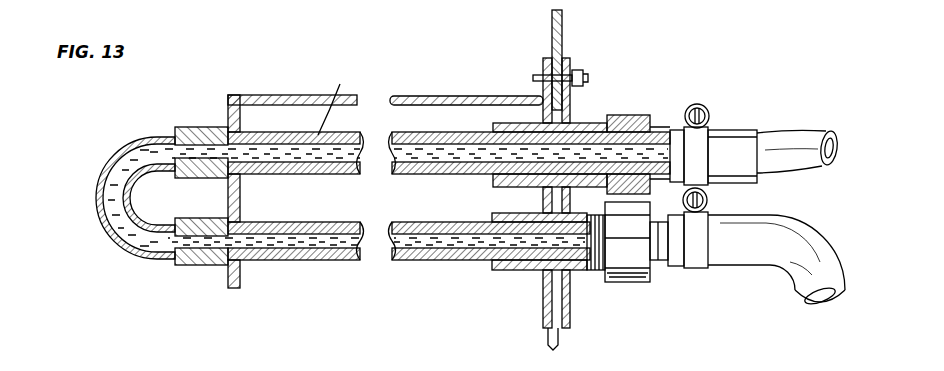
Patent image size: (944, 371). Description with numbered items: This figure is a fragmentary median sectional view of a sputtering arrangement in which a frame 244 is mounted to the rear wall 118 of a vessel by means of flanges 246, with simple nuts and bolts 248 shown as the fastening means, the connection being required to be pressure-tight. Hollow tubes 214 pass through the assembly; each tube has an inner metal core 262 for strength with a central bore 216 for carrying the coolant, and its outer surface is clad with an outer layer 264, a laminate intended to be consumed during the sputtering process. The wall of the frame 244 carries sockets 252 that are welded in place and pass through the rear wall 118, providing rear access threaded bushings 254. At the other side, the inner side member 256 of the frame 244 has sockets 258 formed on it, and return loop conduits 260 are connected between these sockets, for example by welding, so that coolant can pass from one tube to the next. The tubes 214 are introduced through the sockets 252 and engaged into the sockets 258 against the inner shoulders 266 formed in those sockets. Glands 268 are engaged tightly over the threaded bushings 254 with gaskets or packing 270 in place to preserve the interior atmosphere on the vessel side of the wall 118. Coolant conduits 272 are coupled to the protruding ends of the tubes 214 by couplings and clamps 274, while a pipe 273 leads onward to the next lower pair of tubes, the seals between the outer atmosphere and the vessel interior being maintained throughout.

The rear wall 118 is at (558, 333).
The hollow tubes 214 is at (282, 128).
The central bores 216 is at (296, 250).
The frame 244 is at (258, 96).
The flanges 246 is at (541, 92).
The nuts and bolts 248 is at (575, 70).
The sockets 252 is at (578, 123).
The threaded bushings 254 is at (628, 116).
The inner side member 256 is at (228, 196).
The sockets 258 is at (203, 125).
The return loop conduits 260 is at (104, 166).
The inner metal cores 262 is at (370, 285).
The outer layer 264 is at (273, 175).
The inner shoulders 266 is at (175, 131).
The glands 268 is at (648, 121).
The gaskets or packing 270 is at (641, 116).
The coolant conduits 272 is at (790, 176).
The pipe 273 is at (772, 270).
The couplings and clamps 274 is at (702, 138).